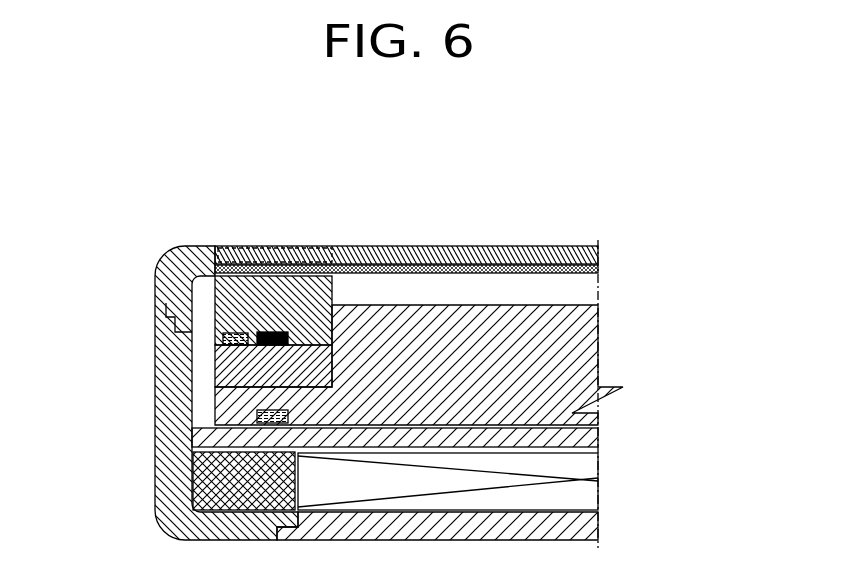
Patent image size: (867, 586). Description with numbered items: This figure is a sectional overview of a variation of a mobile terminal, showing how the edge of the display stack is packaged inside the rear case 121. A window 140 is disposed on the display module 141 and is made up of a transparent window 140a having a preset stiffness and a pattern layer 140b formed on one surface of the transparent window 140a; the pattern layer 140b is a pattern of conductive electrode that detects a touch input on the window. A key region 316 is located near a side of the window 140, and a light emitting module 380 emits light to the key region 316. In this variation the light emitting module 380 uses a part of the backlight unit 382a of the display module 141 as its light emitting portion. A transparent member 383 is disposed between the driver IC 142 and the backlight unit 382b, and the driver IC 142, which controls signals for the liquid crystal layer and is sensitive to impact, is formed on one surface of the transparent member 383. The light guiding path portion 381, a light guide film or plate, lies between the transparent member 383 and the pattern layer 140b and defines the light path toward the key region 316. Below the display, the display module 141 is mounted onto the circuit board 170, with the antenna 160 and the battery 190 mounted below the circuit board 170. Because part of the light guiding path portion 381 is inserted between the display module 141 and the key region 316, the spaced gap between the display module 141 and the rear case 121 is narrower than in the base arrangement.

The rear case 121 is at (165, 437).
The window 140 is at (481, 267).
The transparent window 140a is at (598, 255).
The pattern layer 140b is at (598, 271).
The display module 141 is at (590, 365).
The driver IC 142 is at (268, 333).
The antenna 160 is at (205, 483).
The circuit board 170 is at (588, 440).
The battery 190 is at (588, 493).
The key region 316 is at (240, 246).
The light emitting module 380 is at (178, 303).
The light guiding path portion 381 is at (215, 303).
The backlight unit 382a is at (223, 342).
The backlight unit 382b is at (257, 418).
The transparent member 383 is at (312, 355).